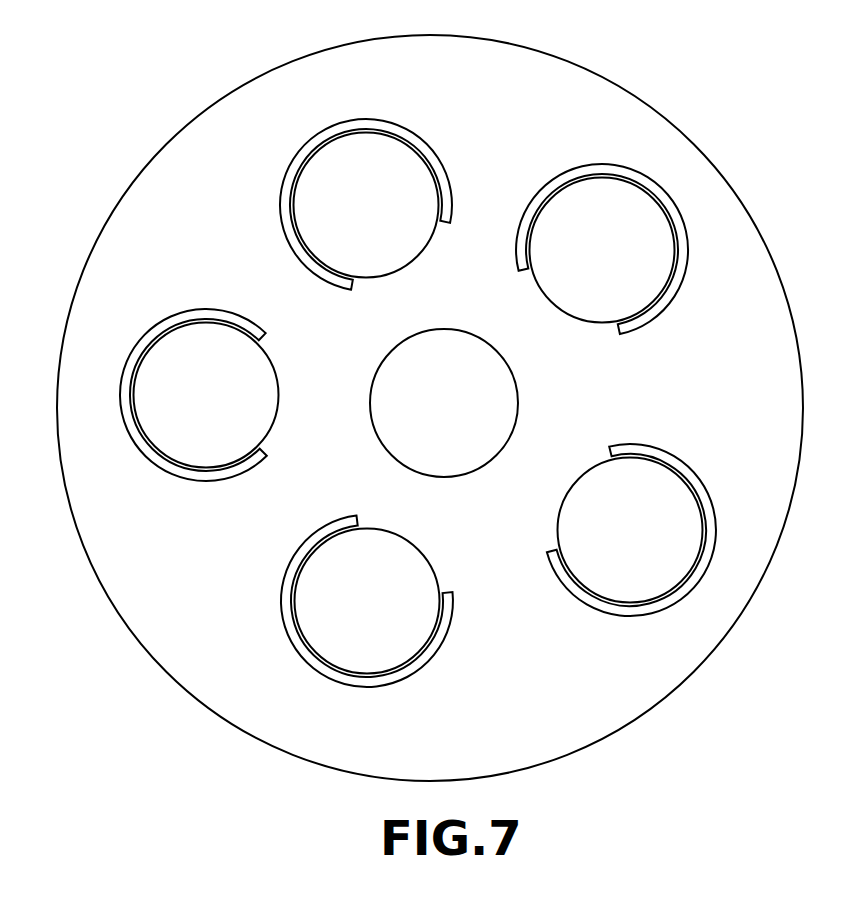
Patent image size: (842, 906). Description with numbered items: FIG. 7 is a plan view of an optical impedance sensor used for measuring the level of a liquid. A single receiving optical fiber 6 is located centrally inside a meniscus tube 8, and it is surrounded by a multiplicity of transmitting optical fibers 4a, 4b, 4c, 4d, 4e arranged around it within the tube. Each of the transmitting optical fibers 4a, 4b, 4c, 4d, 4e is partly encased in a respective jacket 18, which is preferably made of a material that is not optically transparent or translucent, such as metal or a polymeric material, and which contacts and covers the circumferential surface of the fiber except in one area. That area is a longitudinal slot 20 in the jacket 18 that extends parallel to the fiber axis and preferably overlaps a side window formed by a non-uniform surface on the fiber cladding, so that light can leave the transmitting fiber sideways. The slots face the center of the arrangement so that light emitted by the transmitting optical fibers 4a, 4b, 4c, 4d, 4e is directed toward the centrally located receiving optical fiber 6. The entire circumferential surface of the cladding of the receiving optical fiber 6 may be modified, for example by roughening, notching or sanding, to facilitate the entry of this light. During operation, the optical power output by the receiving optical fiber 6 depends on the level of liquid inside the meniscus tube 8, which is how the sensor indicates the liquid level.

The meniscus tube 8 is at (763, 232).
The receiving optical fiber 6 is at (383, 447).
The transmitting optical fiber 4a is at (667, 480).
The transmitting optical fiber 4b is at (580, 190).
The transmitting optical fiber 4c is at (367, 138).
The transmitting optical fiber 4d is at (218, 333).
The transmitting optical fiber 4e is at (302, 620).
The jacket 18 is at (413, 138).
The longitudinal slot 20 is at (381, 306).